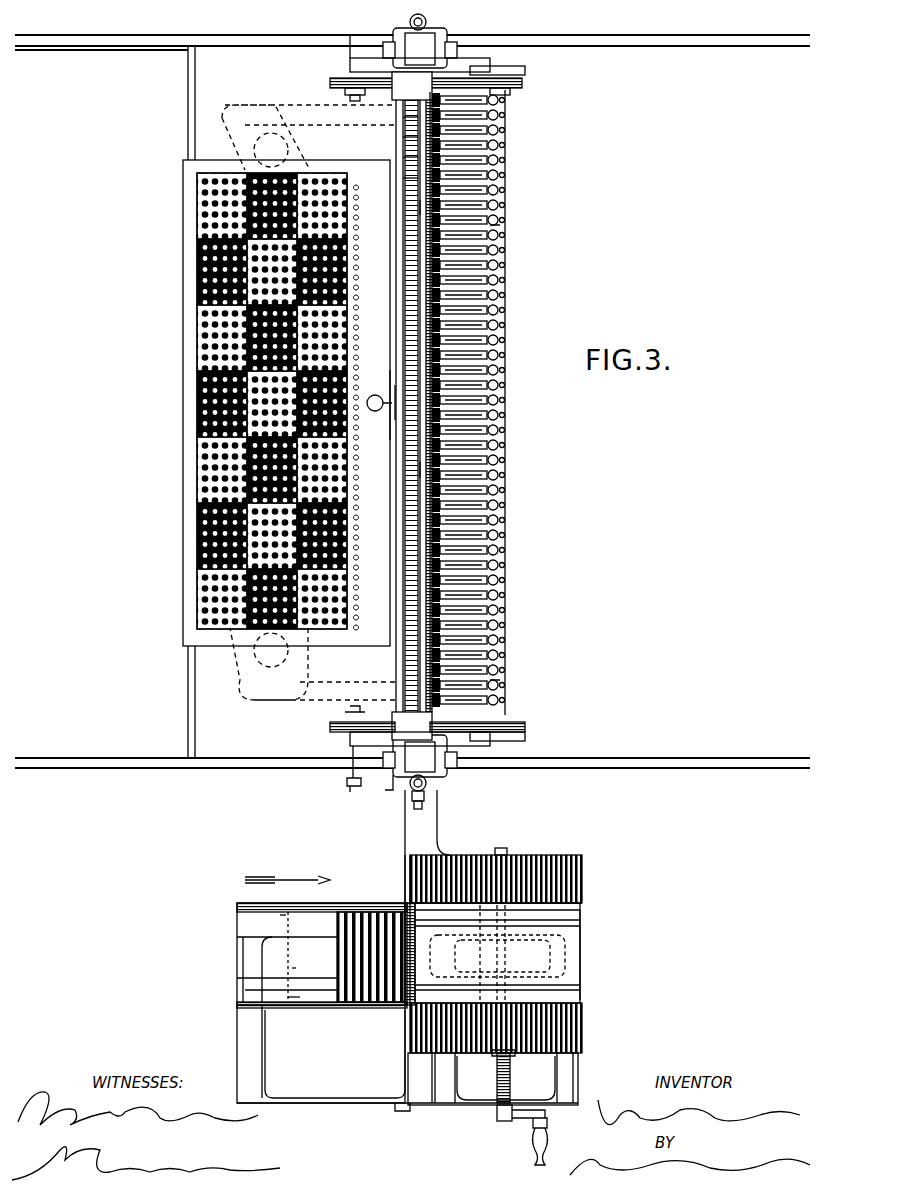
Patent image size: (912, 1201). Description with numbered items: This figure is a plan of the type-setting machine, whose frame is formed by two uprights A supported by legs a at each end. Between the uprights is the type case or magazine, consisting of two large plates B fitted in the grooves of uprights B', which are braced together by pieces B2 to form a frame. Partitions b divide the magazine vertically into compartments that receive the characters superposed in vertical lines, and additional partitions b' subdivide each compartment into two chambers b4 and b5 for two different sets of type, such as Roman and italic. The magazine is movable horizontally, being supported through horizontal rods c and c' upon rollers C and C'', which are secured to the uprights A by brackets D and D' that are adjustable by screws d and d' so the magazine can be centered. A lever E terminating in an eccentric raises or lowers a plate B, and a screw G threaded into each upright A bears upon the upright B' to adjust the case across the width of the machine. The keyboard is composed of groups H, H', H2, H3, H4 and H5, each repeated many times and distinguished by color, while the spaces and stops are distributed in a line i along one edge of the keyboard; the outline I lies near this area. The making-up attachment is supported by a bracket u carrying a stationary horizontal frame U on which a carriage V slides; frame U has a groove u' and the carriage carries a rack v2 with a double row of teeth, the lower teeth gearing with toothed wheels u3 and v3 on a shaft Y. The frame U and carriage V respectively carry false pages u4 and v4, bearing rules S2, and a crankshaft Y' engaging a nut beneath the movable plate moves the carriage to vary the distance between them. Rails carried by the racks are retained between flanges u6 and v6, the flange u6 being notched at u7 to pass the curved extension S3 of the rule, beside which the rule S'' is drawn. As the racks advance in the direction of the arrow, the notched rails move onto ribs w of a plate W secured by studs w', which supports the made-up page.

The legs a is at (412, 397).
The upright A is at (420, 402).
The screw d is at (426, 17).
The bracket D is at (437, 44).
The horizontal rod c is at (425, 83).
The roller C is at (421, 83).
The upright of magazine frame B' is at (412, 406).
The plate B is at (401, 406).
The brace piece B2 is at (418, 468).
The partition b is at (392, 179).
The additional partition b' is at (392, 156).
The chamber b4 is at (402, 137).
The chamber b5 is at (402, 117).
The needle frame M is at (538, 560).
The needle m is at (522, 675).
The keyboard group H is at (275, 403).
The keyboard group H' is at (253, 536).
The keyboard group H2 is at (200, 470).
The pattern plate H3 is at (200, 405).
The pattern plate H4 is at (200, 345).
The pattern plate H5 is at (200, 277).
The line of space and stop keys i is at (359, 407).
The lever E is at (381, 405).
The card I is at (308, 402).
The horizontal rod c' is at (426, 720).
The lower clamp C'' is at (428, 743).
The screw S'' is at (328, 859).
The bracket D' is at (386, 789).
The screw d' is at (433, 788).
The extension of rule S3 is at (404, 812).
The screw G is at (418, 813).
The bracket u is at (433, 823).
The rule S2 is at (488, 847).
The false page u4 is at (582, 880).
The groove u' is at (509, 904).
The notch u7 is at (406, 875).
The flange u6 is at (322, 894).
The stationary frame U is at (407, 1004).
The toothed wheel u3 is at (274, 915).
The carriage V is at (291, 990).
The rack v2 is at (284, 995).
The flange v6 is at (322, 1012).
The plate W is at (497, 953).
The rib w is at (497, 951).
The pin or stud w' is at (595, 955).
The false page v4 is at (582, 1020).
The shaft Y is at (407, 1058).
The toothed wheel v3 is at (494, 1076).
The crankshaft Y' is at (521, 1135).